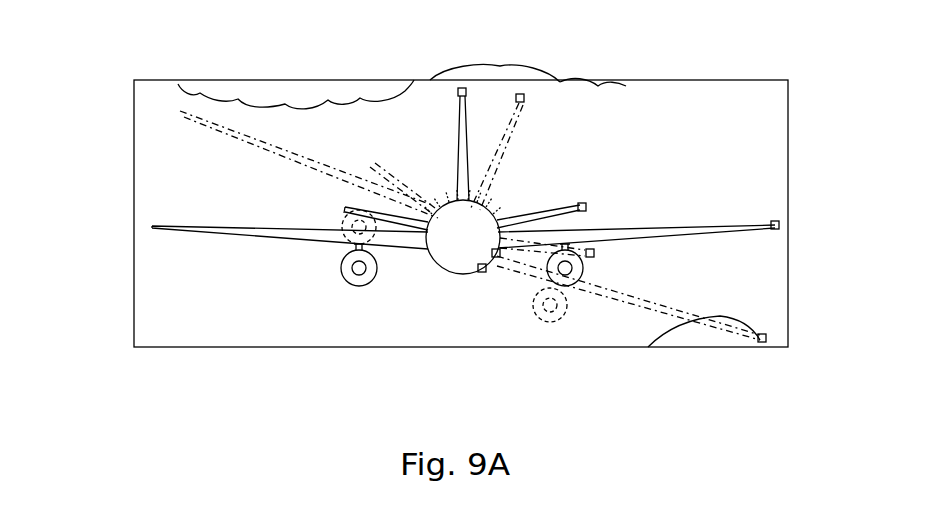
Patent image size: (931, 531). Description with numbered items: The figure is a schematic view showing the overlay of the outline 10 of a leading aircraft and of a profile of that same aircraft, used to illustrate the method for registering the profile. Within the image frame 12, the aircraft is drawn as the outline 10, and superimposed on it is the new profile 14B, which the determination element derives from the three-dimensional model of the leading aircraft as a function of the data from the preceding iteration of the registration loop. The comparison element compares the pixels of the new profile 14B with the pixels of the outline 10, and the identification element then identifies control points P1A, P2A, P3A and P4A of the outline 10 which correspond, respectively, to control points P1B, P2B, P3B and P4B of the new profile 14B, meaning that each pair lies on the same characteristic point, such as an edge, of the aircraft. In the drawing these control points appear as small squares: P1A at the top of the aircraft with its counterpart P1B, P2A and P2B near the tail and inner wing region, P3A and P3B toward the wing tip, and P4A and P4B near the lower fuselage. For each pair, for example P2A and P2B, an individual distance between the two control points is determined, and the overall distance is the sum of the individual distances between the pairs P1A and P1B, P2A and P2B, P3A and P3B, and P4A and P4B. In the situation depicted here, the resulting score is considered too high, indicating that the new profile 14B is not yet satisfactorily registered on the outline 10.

The image frame / camera field of view 12 is at (134, 112).
The outline 10 is at (452, 126).
The new profile 14B is at (505, 158).
The control point P1A is at (458, 90).
The control point P1B is at (524, 96).
The control point P2A is at (586, 207).
The control point P2B is at (594, 255).
The control point P3A is at (779, 225).
The control point P3B is at (766, 338).
The control point P4A is at (496, 258).
The control point P4B is at (482, 273).